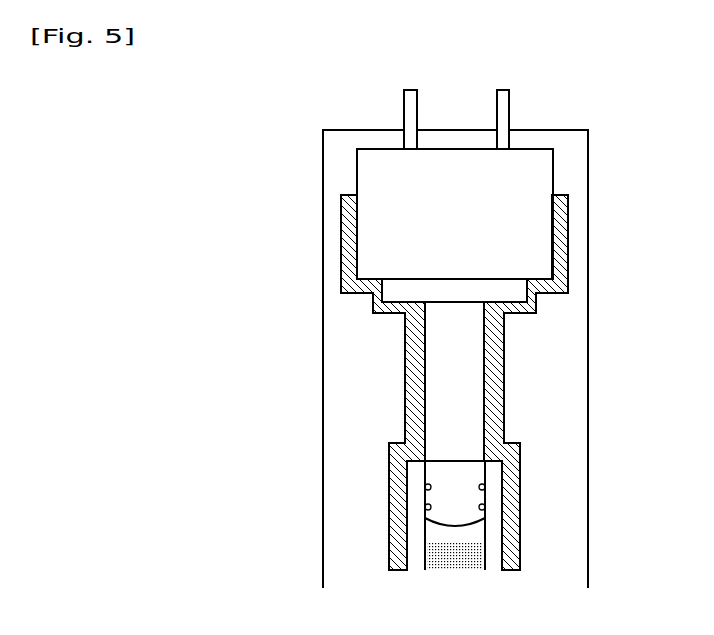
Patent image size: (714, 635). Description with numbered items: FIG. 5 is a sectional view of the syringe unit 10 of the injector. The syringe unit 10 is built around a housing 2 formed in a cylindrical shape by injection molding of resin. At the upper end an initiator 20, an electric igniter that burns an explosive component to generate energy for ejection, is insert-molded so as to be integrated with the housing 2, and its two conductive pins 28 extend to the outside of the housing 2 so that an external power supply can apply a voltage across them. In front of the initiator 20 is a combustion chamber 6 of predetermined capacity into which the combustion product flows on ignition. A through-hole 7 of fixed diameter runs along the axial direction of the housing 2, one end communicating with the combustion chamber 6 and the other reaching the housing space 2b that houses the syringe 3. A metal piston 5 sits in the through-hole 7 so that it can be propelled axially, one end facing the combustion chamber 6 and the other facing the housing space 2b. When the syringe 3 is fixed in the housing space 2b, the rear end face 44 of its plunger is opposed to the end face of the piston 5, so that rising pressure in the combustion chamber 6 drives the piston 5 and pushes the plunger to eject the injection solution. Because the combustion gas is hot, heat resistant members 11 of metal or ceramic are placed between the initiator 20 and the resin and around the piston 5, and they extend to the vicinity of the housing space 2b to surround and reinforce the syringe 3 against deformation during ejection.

The housing 2 is at (588, 230).
The housing space 2b is at (500, 528).
The syringe 3 is at (493, 490).
The piston 5 is at (468, 384).
The combustion chamber 6 is at (405, 292).
The through-hole 7 is at (410, 419).
The syringe unit 10 is at (266, 513).
The heat resistant members 11 is at (498, 333).
The initiator 20 is at (531, 149).
The conductive pins 28 is at (403, 98).
The rear end face 44 is at (467, 461).